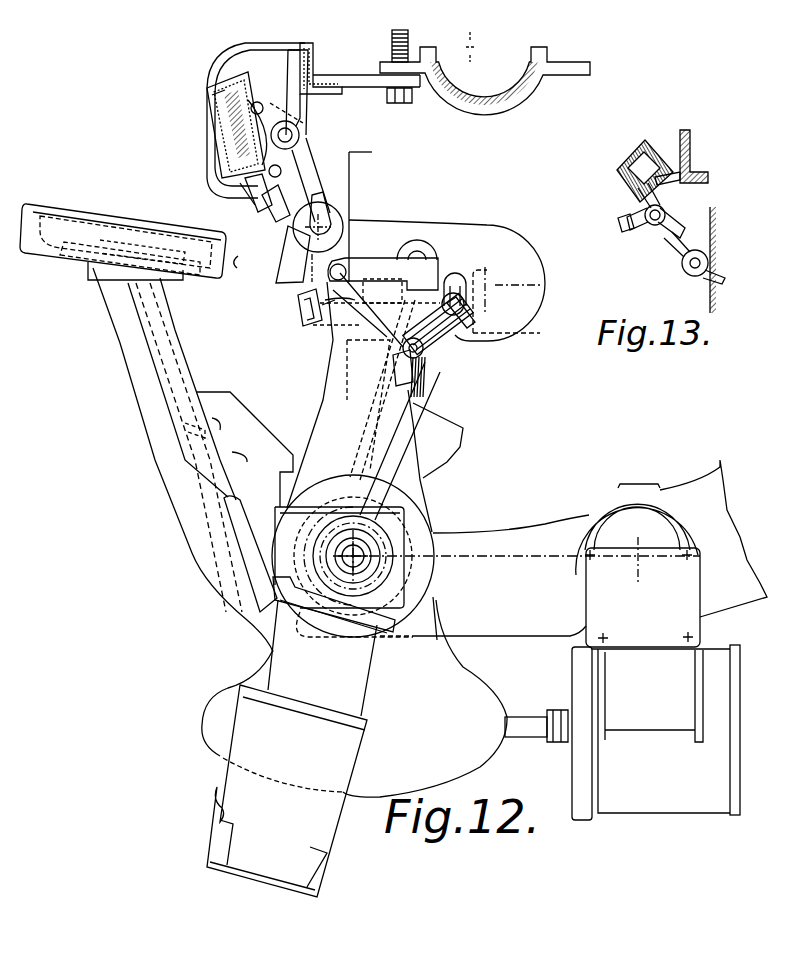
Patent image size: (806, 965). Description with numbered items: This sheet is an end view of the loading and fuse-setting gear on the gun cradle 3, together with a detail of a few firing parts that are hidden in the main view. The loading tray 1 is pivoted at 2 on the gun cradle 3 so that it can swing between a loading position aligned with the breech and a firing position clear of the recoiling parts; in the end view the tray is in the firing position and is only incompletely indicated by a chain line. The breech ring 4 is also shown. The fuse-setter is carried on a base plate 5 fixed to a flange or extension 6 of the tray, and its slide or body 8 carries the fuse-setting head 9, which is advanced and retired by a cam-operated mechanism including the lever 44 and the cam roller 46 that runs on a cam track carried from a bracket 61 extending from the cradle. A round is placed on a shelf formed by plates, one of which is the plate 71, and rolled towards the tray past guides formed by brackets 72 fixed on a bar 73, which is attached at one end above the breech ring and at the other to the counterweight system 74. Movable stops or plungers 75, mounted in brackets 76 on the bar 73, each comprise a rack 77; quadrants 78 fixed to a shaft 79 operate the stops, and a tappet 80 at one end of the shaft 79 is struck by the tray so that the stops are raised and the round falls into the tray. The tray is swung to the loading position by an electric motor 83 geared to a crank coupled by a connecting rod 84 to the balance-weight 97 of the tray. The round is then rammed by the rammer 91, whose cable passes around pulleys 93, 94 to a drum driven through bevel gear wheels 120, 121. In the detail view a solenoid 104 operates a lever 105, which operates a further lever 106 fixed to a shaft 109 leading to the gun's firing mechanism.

In FIG. 12, the loading tray 1 is at (290, 303).
In FIG. 12, the pivot 2 is at (358, 556).
In FIG. 12, the gun cradle 3 is at (484, 545).
In FIG. 12, the breech ring 4 is at (494, 228).
In FIG. 13, the breech ring 4 is at (711, 220).
In FIG. 12, the base plate 5 is at (306, 322).
In FIG. 12, the flange or extension 6 is at (350, 298).
In FIG. 12, the slide or body 8 is at (338, 205).
In FIG. 12, the fuse-setting head 9 is at (426, 258).
In FIG. 12, the lever 44 is at (388, 259).
In FIG. 12, the cam roller 46 is at (370, 530).
In FIG. 12, the bracket 61 is at (212, 110).
In FIG. 12, the plate 71 is at (252, 271).
In FIG. 12, the brackets 72 is at (290, 222).
In FIG. 12, the bar 73 is at (316, 56).
In FIG. 12, the counterweight system 74 is at (440, 62).
In FIG. 12, the movable stops or plungers 75 is at (252, 202).
In FIG. 12, the brackets 76 is at (222, 122).
In FIG. 12, the rack 77 is at (236, 158).
In FIG. 12, the quadrants 78 is at (291, 136).
In FIG. 12, the shaft 79 is at (299, 128).
In FIG. 12, the tappet 80 is at (323, 202).
In FIG. 12, the electric motor 83 is at (647, 802).
In FIG. 12, the connecting rod 84 is at (519, 718).
In FIG. 12, the rammer 91 is at (460, 278).
In FIG. 12, the pulley 93 is at (392, 386).
In FIG. 12, the pulley 94 is at (437, 345).
In FIG. 12, the balance-weight / electric motor 97 is at (347, 737).
In FIG. 13, the solenoid 104 is at (668, 148).
In FIG. 13, the lever 105 is at (652, 236).
In FIG. 13, the further lever 106 is at (668, 245).
In FIG. 13, the shaft 109 is at (690, 273).
In FIG. 12, the bevel gear wheel 120 is at (353, 640).
In FIG. 12, the bevel gear wheel 121 is at (404, 578).